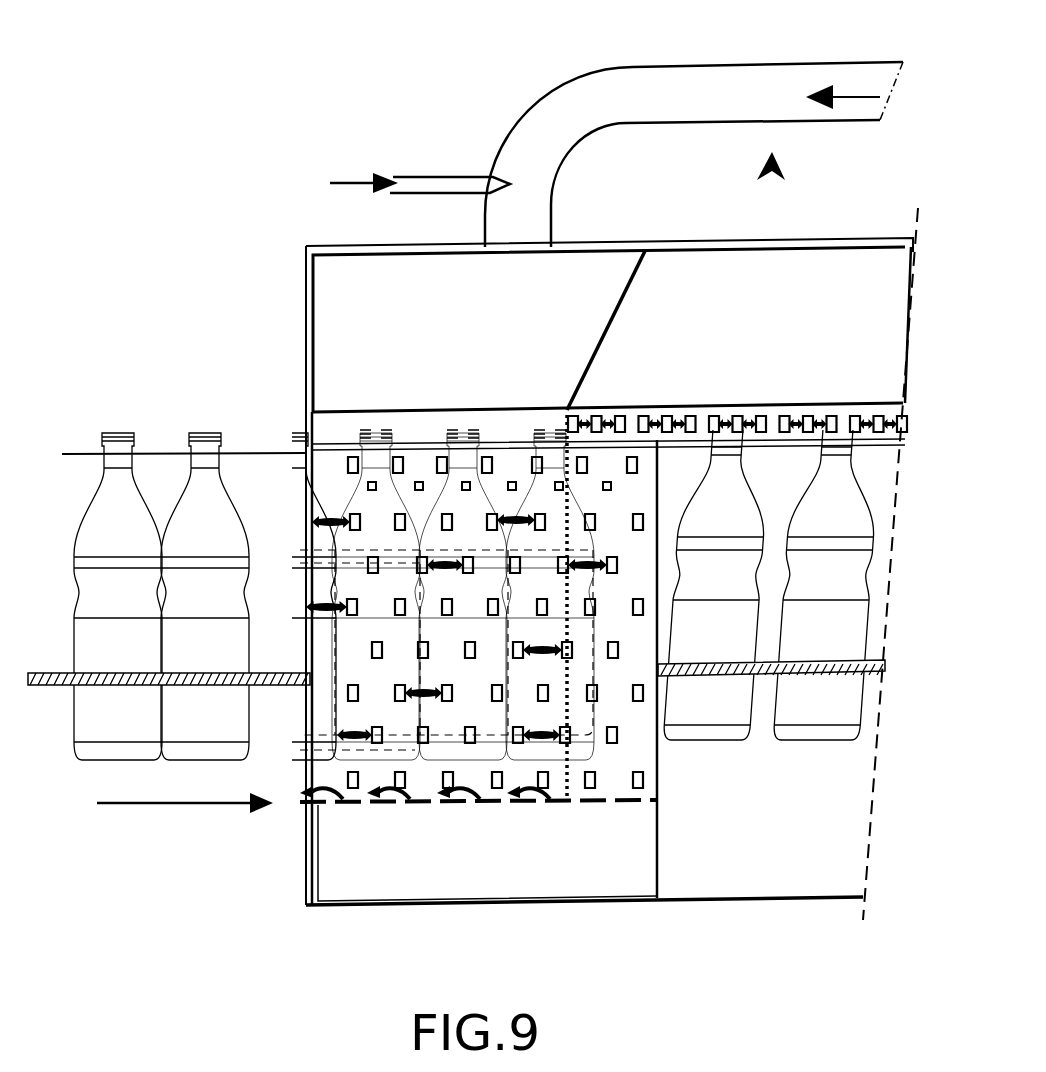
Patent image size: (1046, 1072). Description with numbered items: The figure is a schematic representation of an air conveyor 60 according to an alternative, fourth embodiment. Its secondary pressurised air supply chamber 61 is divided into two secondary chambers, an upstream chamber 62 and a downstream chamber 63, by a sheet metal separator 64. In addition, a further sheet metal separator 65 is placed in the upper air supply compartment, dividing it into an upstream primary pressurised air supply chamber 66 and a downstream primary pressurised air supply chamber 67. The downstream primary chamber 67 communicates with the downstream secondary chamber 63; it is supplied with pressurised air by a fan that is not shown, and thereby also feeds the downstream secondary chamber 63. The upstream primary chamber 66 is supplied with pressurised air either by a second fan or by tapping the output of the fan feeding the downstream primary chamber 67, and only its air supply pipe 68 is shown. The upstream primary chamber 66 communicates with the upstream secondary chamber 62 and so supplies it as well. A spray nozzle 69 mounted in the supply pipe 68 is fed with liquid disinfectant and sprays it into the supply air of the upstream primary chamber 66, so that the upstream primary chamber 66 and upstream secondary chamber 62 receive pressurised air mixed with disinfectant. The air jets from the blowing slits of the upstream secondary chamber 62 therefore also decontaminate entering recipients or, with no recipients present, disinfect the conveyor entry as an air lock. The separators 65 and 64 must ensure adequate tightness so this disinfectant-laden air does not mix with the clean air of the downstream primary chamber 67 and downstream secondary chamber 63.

The air conveyor 60 is at (806, 216).
The secondary pressurised air supply chamber 61 is at (380, 889).
The upstream chamber 62 is at (473, 805).
The downstream chamber 63 is at (608, 803).
The sheet metal separator 64 is at (540, 803).
The sheet metal separator 65 is at (603, 338).
The upstream primary pressurised air supply chamber 66 is at (447, 346).
The downstream primary pressurised air supply chamber 67 is at (779, 339).
The air supply pipe 68 is at (553, 92).
The spray nozzle 69 is at (514, 160).